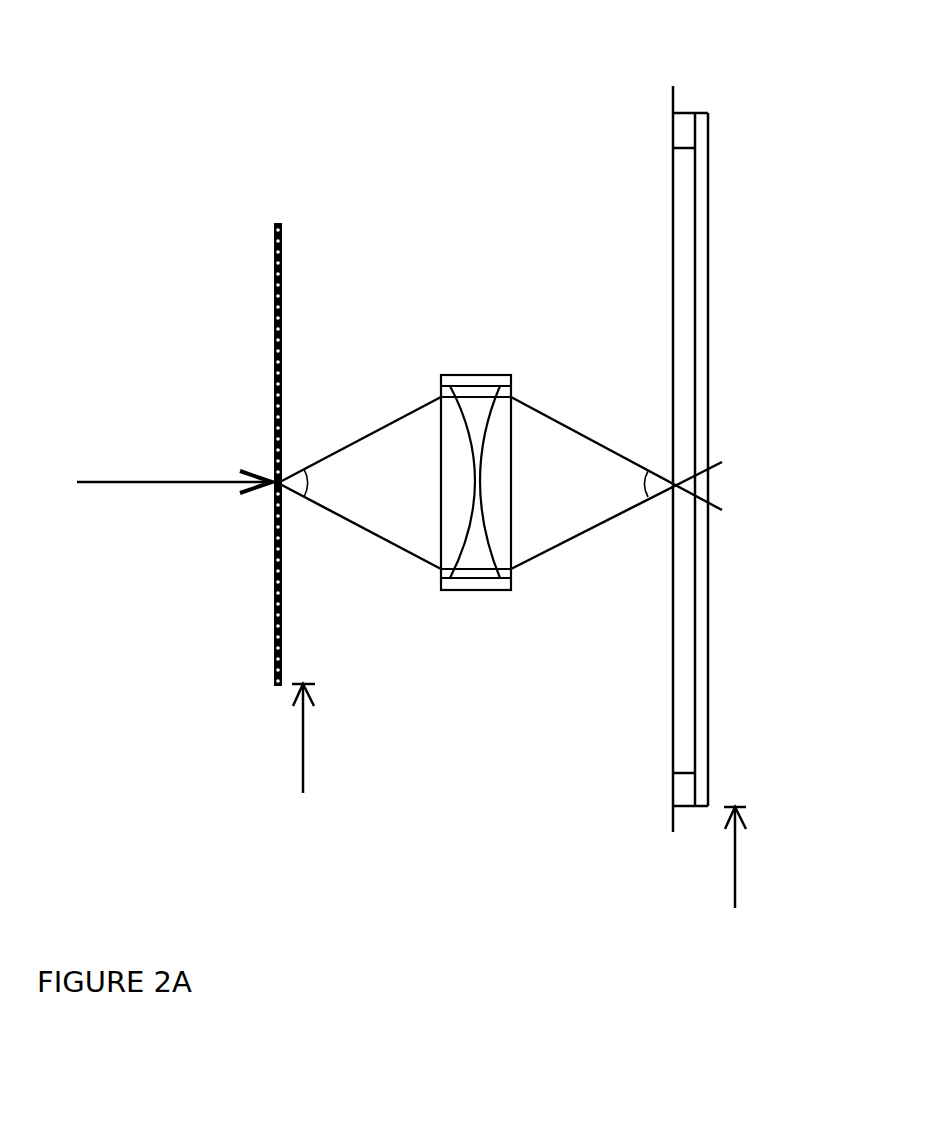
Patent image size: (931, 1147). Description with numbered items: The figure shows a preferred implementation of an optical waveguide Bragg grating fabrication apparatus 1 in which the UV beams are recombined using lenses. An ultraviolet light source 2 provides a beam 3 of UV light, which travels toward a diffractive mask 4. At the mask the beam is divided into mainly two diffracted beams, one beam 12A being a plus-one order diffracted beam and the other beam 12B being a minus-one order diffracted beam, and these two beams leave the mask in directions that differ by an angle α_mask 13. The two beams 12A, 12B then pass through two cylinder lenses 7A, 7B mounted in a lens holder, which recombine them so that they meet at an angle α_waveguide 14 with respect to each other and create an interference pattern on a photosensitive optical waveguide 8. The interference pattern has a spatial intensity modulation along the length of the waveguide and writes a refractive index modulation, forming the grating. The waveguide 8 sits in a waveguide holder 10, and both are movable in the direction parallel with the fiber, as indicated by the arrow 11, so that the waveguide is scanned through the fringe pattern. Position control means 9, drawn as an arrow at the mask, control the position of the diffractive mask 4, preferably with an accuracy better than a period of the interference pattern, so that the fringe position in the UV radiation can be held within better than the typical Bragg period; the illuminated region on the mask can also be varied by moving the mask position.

The optical waveguide Bragg grating fabrication apparatus 1 is at (377, 143).
The light source 2 is at (32, 485).
The beam 3 is at (174, 468).
The diffractive mask 4 is at (274, 243).
The cylinder lens 7A is at (442, 392).
The cylinder lens 7B is at (503, 388).
The photosensitive optical waveguide 8 is at (672, 162).
The position control means 9 is at (310, 738).
The waveguide holder 10 is at (710, 138).
The detector displacement direction 11 is at (751, 857).
The +1 order diffracted beam 12A is at (355, 535).
The −1 order diffracted beam 12B is at (372, 433).
The angle α_mask 13 is at (305, 483).
The angle α_waveguide 14 is at (645, 486).